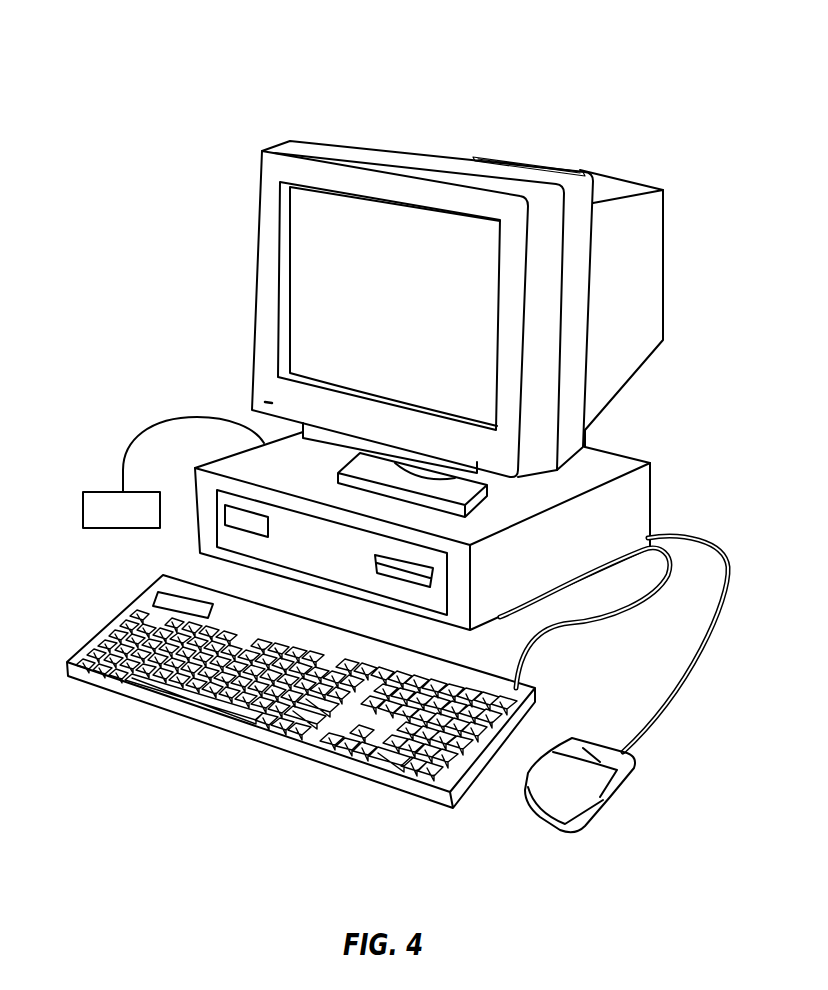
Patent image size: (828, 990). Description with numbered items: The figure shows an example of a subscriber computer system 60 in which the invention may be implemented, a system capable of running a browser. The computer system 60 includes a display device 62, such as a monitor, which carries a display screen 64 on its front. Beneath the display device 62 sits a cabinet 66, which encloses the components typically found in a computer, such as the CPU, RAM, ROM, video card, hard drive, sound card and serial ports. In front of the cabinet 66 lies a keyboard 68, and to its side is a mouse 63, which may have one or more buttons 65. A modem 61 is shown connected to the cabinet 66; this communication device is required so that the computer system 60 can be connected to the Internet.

The subscriber computer system 60 is at (628, 58).
The modem 61 is at (120, 530).
The display device 62 is at (665, 273).
The mouse 63 is at (596, 705).
The display screen 64 is at (375, 232).
The buttons 65 is at (580, 750).
The cabinet 66 is at (650, 462).
The keyboard 68 is at (233, 737).